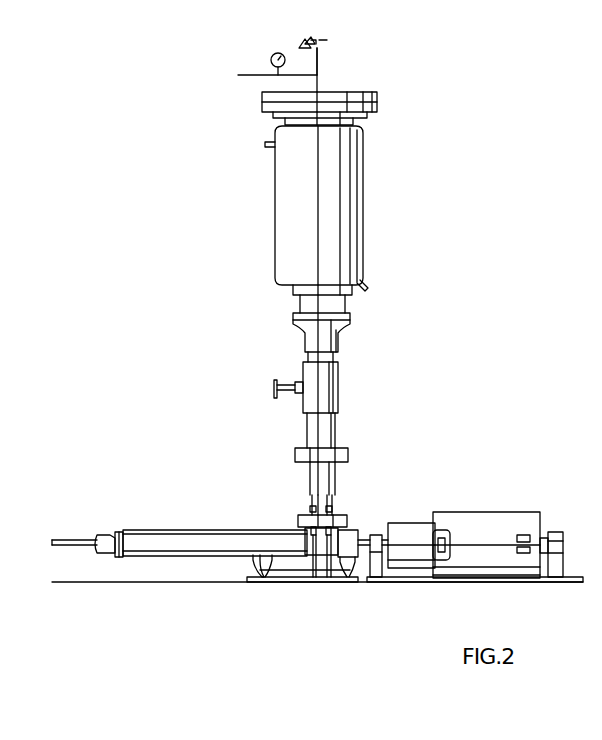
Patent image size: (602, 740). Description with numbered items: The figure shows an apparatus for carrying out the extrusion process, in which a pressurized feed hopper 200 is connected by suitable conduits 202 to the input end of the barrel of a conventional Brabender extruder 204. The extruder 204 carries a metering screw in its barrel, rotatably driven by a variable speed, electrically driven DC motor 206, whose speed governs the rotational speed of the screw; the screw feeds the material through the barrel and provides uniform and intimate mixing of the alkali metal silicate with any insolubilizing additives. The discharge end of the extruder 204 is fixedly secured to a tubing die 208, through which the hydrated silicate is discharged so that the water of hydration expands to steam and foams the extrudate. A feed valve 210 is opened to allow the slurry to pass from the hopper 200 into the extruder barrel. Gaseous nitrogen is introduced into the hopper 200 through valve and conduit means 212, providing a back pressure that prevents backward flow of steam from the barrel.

The pressurized feed hopper 200 is at (365, 256).
The conduits 202 is at (343, 394).
The extruder device 204 is at (240, 530).
The DC motor 206 is at (525, 517).
The tubing die 208 is at (98, 537).
The feed valve 210 is at (272, 388).
The valve and conduit means 212 is at (243, 78).